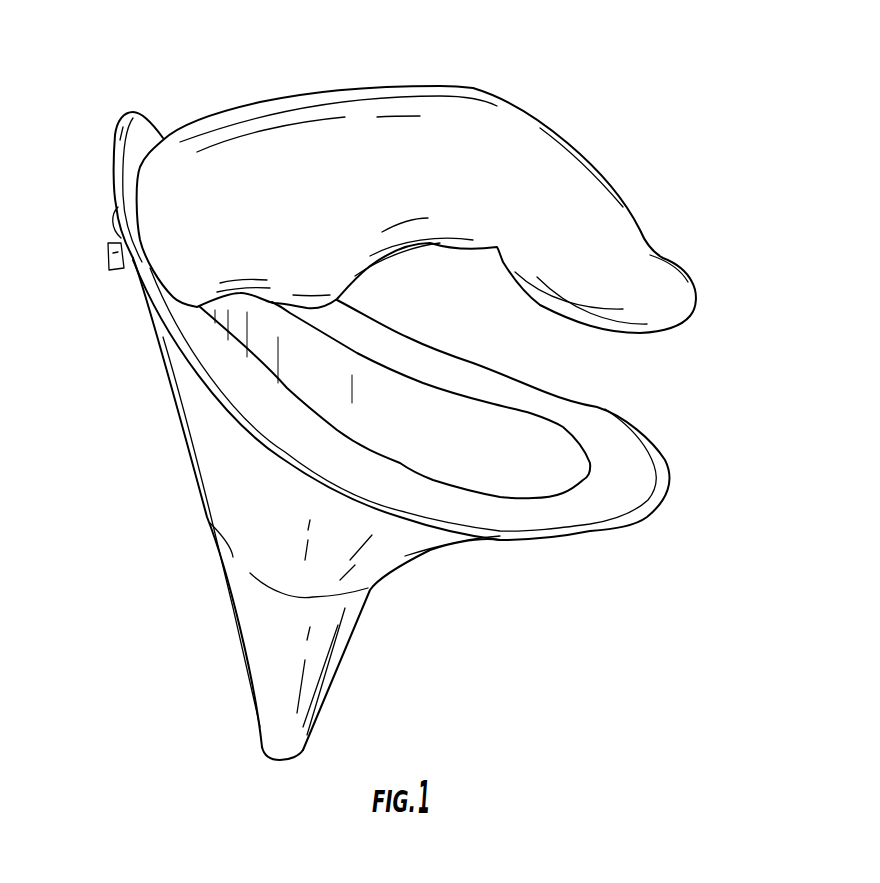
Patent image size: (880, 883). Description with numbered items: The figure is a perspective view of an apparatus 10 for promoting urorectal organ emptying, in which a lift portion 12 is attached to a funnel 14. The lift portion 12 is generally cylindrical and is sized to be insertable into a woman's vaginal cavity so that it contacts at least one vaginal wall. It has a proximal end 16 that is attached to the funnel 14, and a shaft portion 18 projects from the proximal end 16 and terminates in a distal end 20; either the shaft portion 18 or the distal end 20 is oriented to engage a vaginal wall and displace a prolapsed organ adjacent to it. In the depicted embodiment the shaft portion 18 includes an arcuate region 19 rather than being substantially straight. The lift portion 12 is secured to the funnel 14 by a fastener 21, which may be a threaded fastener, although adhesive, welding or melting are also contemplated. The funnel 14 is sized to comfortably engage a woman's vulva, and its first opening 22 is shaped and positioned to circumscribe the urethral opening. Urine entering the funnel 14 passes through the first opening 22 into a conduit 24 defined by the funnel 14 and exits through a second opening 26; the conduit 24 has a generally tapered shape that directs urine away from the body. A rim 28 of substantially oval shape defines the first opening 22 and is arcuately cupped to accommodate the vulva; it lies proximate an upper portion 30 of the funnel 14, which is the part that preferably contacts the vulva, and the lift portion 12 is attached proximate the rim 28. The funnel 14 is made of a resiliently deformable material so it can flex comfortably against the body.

The apparatus 10 is at (192, 62).
The lift portion 12 is at (503, 75).
The funnel 14 is at (176, 515).
The proximal end 16 is at (150, 198).
The shaft portion 18 is at (392, 135).
The arcuate region 19 is at (473, 252).
The distal end 20 is at (653, 297).
The fastener 21 is at (117, 272).
The first opening 22 is at (451, 450).
The conduit 24 is at (330, 614).
The second opening 26 is at (282, 762).
The rim 28 is at (637, 453).
The upper portion 30 is at (72, 100).